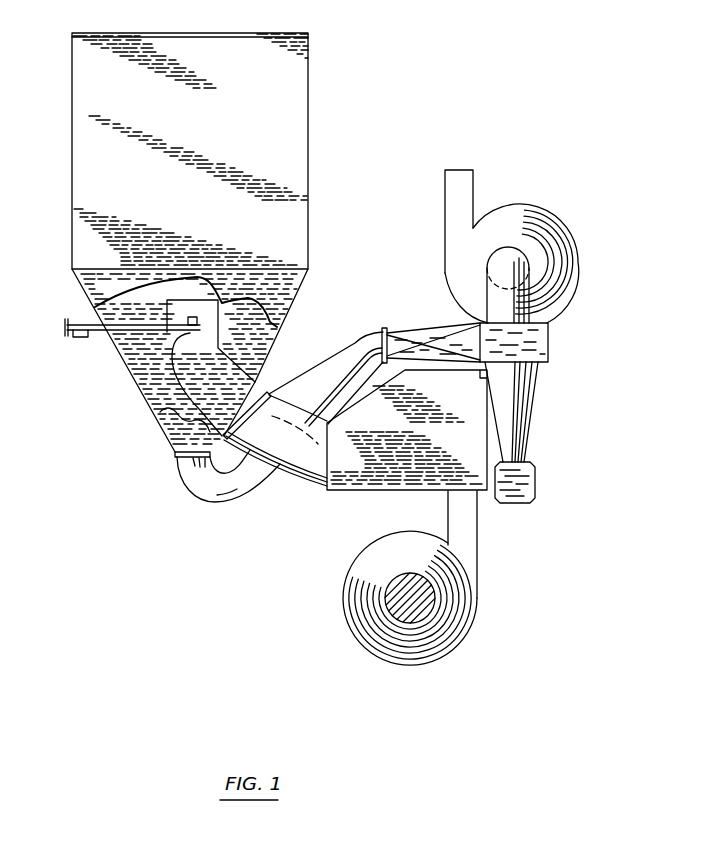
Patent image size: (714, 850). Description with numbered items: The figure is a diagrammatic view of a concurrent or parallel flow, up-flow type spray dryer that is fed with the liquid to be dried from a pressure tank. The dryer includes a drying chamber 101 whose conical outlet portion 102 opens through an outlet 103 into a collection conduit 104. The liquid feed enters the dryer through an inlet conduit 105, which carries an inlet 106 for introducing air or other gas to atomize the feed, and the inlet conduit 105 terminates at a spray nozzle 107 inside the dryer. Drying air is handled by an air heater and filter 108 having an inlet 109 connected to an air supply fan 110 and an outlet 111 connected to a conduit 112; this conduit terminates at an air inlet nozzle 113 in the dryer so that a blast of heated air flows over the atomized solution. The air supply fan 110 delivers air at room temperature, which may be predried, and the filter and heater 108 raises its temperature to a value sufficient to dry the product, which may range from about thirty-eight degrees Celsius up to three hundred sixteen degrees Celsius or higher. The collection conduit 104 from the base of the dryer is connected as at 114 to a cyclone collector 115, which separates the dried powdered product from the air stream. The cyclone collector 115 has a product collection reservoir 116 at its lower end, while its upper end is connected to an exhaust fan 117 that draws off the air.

The drying chamber 101 is at (73, 159).
The conical outlet portion 102 is at (134, 375).
The outlet 103 is at (175, 455).
The collection conduit 104 is at (200, 488).
The inlet conduit 105 is at (66, 326).
The inlet 106 is at (86, 338).
The spray nozzle 107 is at (211, 368).
The air heater and filter 108 is at (405, 490).
The inlet 109 is at (478, 500).
The air supply fan 110 is at (345, 600).
The outlet 111 is at (324, 492).
The conduit 112 is at (268, 404).
The air inlet nozzle 113 is at (205, 305).
The connection 114 is at (386, 333).
The cyclone collector 115 is at (548, 362).
The product collection reservoir 116 is at (534, 490).
The exhaust fan 117 is at (518, 210).